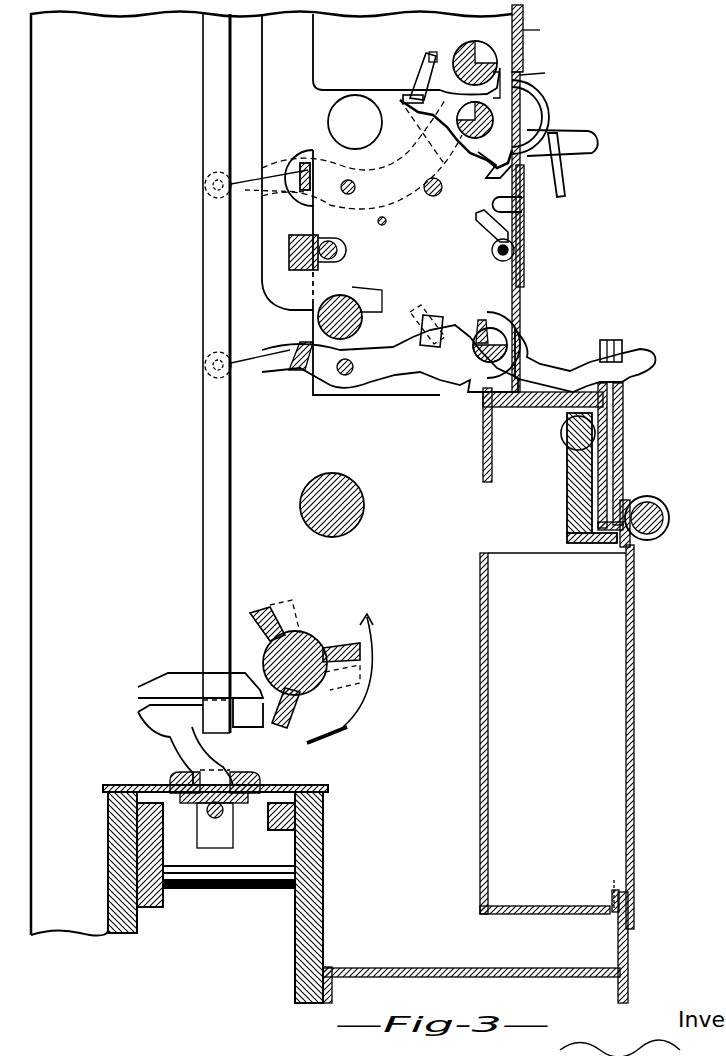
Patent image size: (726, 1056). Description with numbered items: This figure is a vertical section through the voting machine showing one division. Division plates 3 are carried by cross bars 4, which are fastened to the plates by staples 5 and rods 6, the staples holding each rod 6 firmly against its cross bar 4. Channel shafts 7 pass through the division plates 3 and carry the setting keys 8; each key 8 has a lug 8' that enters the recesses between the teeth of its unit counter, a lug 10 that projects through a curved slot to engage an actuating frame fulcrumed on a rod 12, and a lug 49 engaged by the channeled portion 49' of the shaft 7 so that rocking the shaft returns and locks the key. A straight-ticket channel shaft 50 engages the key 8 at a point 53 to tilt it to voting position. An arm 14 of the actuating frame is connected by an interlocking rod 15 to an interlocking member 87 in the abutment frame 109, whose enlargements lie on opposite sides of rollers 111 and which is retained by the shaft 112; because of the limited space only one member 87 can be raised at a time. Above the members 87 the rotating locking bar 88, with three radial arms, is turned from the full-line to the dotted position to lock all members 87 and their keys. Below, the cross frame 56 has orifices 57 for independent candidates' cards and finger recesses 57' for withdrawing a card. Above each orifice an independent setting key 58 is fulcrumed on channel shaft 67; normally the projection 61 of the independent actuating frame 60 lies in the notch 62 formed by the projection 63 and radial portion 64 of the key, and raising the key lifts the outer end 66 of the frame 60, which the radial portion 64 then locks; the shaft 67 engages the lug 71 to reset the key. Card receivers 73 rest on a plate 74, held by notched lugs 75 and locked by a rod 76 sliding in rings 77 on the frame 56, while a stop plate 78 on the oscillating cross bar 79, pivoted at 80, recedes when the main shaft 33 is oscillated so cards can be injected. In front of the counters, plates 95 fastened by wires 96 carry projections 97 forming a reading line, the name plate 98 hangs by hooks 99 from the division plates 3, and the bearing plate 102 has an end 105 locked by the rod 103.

The division plates 3 is at (381, 204).
The cross bars 4 is at (330, 240).
The staples 5 is at (410, 207).
The rods 6 is at (324, 256).
The channel shafts 7 is at (470, 138).
The setting keys 8 is at (580, 152).
The lug 8' is at (397, 89).
The lugs 10 is at (426, 57).
The rods 12 is at (387, 154).
The arm 14 is at (245, 190).
The interlocking rods 15 is at (213, 263).
The main actuating shaft 33 is at (340, 462).
The lug 49 is at (550, 111).
The channeled portion 49' is at (553, 117).
The channel shafts 50 is at (455, 50).
The point 53 is at (528, 75).
The cross frame 56 is at (624, 455).
The orifices 57 is at (577, 455).
The finger recesses 57' is at (640, 339).
The independent setting key 58 is at (542, 375).
The independent actuating frame 60 is at (330, 372).
The projection 61 is at (425, 360).
The notch 62 is at (480, 340).
The projection 63 is at (448, 372).
The radial portion 64 is at (420, 322).
The outer end 66 is at (290, 362).
The channel shaft 67 is at (520, 335).
The lug 71 is at (482, 320).
The card receivers 73 is at (557, 737).
The plate 74 is at (628, 938).
The notched lugs 75 is at (612, 905).
The rod 76 is at (660, 518).
The rings 77 is at (648, 532).
The stop plate 78 is at (583, 545).
The oscillating cross bar 79 is at (567, 518).
The pivot 80 is at (566, 433).
The interlocking members 87 is at (248, 718).
The rotating locking bar 88 is at (296, 631).
The plates 95 is at (518, 300).
The wires 96 is at (525, 257).
The projections 97 is at (490, 222).
The plate 98 is at (528, 33).
The hooks 99 is at (528, 207).
The plate 102 is at (325, 120).
The rod 103 is at (356, 300).
The ends 105 is at (345, 270).
The abutment frames 109 is at (175, 780).
The rollers 111 is at (192, 806).
The shaft 112 is at (225, 815).